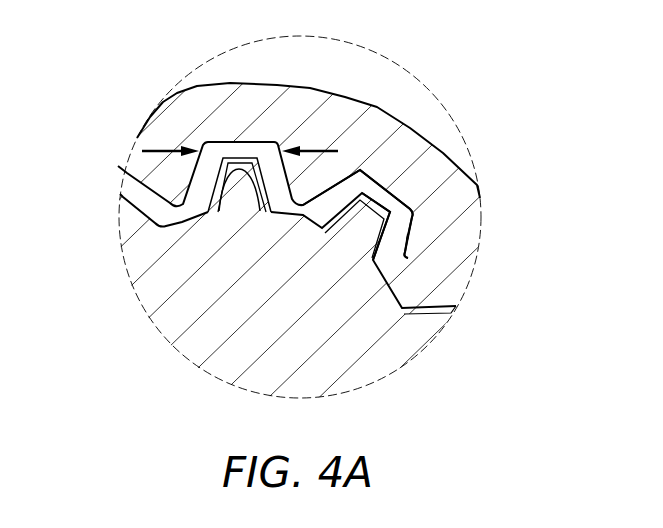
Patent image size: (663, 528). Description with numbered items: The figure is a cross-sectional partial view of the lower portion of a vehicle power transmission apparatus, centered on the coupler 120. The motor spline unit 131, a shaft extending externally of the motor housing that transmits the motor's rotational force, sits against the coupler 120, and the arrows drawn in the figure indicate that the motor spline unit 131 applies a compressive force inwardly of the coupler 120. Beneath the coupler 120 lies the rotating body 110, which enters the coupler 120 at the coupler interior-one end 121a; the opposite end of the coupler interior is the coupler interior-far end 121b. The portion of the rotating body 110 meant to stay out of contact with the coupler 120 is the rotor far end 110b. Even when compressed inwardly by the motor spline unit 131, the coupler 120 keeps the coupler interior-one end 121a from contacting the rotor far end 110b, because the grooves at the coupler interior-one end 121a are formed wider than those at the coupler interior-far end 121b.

The motor spline unit 131 is at (207, 90).
The coupler interior-one end 121a is at (378, 248).
The coupler 120 is at (130, 192).
The rotating body 110 is at (133, 274).
The rotor far end 110b is at (390, 212).
The coupler interior-far end 121b is at (408, 258).